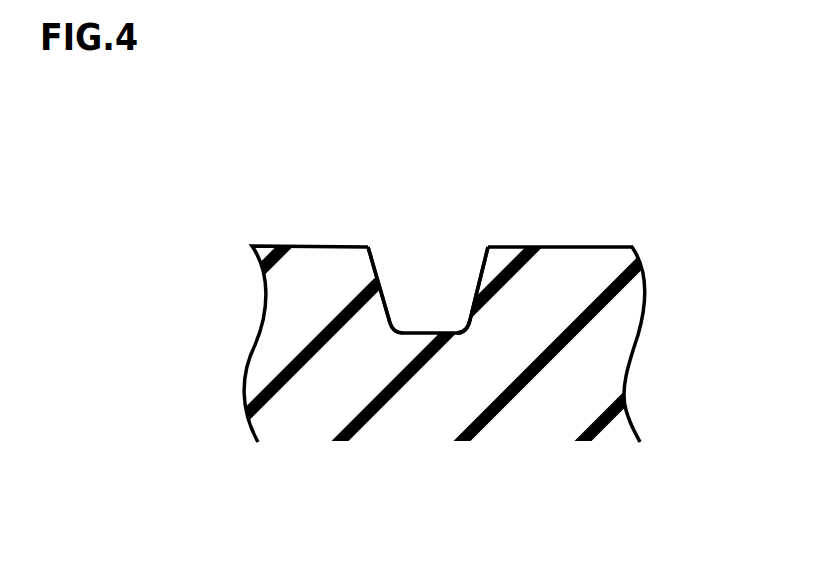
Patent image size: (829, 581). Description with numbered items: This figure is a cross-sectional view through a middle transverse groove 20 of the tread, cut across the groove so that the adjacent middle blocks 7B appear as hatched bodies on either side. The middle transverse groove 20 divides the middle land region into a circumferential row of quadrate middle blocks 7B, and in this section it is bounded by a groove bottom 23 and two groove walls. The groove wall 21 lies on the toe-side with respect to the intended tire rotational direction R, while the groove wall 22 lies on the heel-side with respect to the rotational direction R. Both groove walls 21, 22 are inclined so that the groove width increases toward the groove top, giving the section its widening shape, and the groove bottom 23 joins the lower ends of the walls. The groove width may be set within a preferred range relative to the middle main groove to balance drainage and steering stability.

The middle block 7B is at (323, 278).
The middle transverse groove 20 is at (427, 270).
The groove wall 21 is at (373, 262).
The groove wall 22 is at (482, 262).
The groove bottom 23 is at (432, 330).
The tire rotational direction R is at (359, 114).